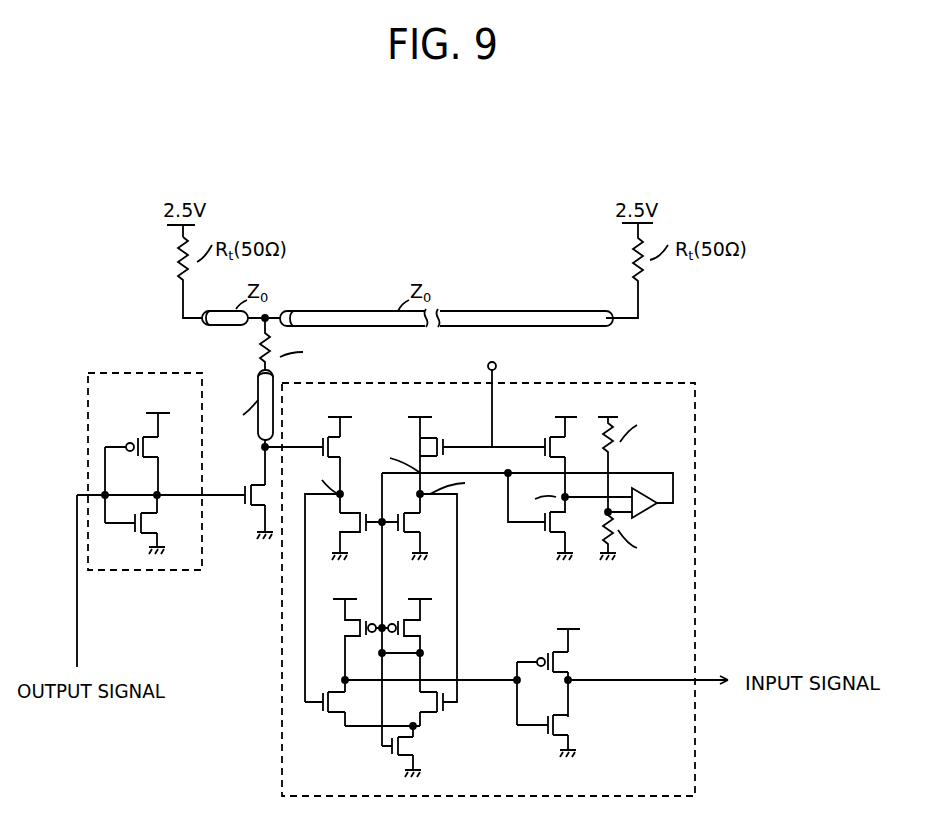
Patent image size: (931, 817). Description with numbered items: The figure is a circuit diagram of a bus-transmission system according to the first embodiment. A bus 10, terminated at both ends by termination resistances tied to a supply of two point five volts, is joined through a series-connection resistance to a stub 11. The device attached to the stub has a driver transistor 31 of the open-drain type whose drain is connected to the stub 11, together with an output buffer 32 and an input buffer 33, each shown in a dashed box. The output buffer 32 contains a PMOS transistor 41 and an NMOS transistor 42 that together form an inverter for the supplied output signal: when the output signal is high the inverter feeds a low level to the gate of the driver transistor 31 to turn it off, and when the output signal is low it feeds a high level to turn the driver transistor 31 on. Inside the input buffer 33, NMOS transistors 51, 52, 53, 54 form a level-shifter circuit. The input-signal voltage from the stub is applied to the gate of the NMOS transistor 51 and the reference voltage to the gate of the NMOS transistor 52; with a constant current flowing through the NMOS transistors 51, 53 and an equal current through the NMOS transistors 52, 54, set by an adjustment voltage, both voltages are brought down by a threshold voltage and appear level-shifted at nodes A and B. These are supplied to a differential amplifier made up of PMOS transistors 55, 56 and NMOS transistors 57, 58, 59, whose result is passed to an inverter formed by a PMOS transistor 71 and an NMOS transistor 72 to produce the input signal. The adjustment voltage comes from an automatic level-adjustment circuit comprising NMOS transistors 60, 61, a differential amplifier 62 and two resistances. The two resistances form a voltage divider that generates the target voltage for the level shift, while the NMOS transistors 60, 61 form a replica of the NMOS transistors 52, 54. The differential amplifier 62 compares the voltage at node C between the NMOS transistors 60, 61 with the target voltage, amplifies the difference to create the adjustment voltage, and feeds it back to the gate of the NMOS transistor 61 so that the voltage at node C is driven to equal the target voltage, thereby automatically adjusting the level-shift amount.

The bus 10 is at (300, 311).
The stub 11 is at (257, 376).
The driver transistor 31 is at (243, 505).
The output buffer 32 is at (92, 580).
The input buffer 33 is at (593, 381).
The PMOS transistor 41 is at (158, 448).
The NMOS transistor 42 is at (160, 523).
The NMOS transistor 51 is at (323, 440).
The NMOS transistor 52 is at (447, 435).
The NMOS transistor 53 is at (365, 510).
The NMOS transistor 54 is at (415, 520).
The PMOS transistor 55 is at (348, 627).
The PMOS transistor 56 is at (418, 625).
The NMOS transistor 57 is at (326, 712).
The NMOS transistor 58 is at (440, 713).
The NMOS transistor 59 is at (393, 757).
The NMOS transistor 60 is at (543, 437).
The NMOS transistor 61 is at (547, 530).
The differential amplifier 62 is at (650, 513).
The PMOS transistor 71 is at (572, 662).
The NMOS transistor 72 is at (575, 725).